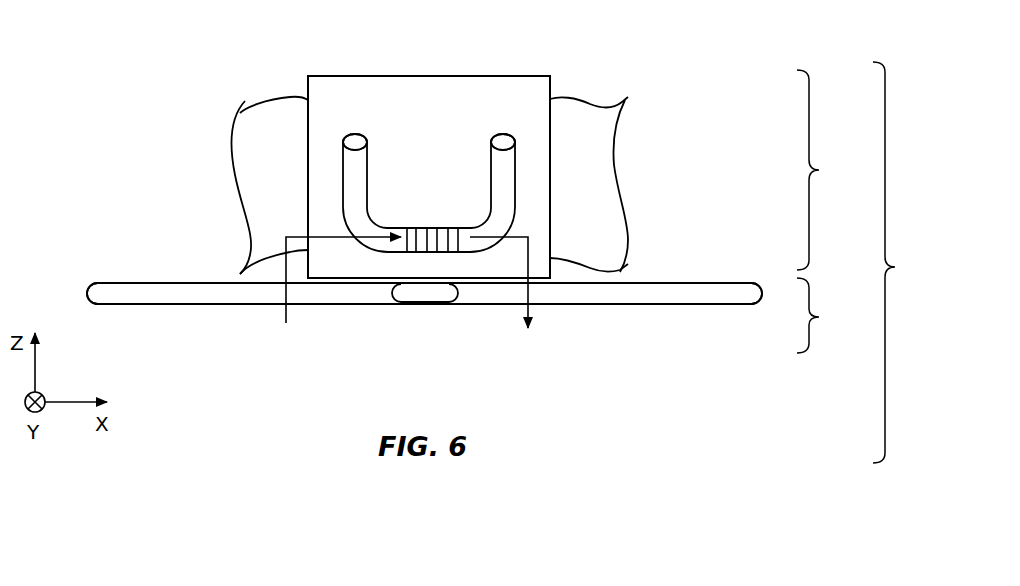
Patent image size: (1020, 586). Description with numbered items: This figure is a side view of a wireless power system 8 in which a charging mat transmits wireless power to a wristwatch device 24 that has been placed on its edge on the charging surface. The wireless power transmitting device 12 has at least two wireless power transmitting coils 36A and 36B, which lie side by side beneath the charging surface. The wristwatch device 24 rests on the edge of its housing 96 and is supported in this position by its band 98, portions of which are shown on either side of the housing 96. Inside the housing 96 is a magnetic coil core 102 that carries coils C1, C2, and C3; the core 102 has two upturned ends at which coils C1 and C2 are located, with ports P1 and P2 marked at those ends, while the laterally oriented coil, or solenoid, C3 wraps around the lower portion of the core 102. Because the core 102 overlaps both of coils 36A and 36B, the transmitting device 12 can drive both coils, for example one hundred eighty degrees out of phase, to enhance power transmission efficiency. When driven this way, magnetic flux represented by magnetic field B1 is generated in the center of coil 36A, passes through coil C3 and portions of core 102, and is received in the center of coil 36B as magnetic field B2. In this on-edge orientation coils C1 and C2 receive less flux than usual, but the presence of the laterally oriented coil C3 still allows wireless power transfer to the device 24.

The housing 96 is at (373, 76).
The band 98 is at (280, 113).
The magnetic coil core 102 is at (362, 172).
The first port P1 is at (353, 135).
The coil C1 is at (356, 133).
The coil C2 is at (506, 136).
The second port P2 is at (517, 142).
The laterally oriented coil (solenoid) C3 is at (460, 221).
The magnetic field B1 is at (343, 269).
The magnetic field B2 is at (518, 285).
The wireless power transmitting coil 36A is at (140, 283).
The wireless power transmitting coil 36B is at (725, 283).
The device 24 is at (823, 170).
The device 12 is at (823, 315).
The wireless power system 8 is at (893, 262).